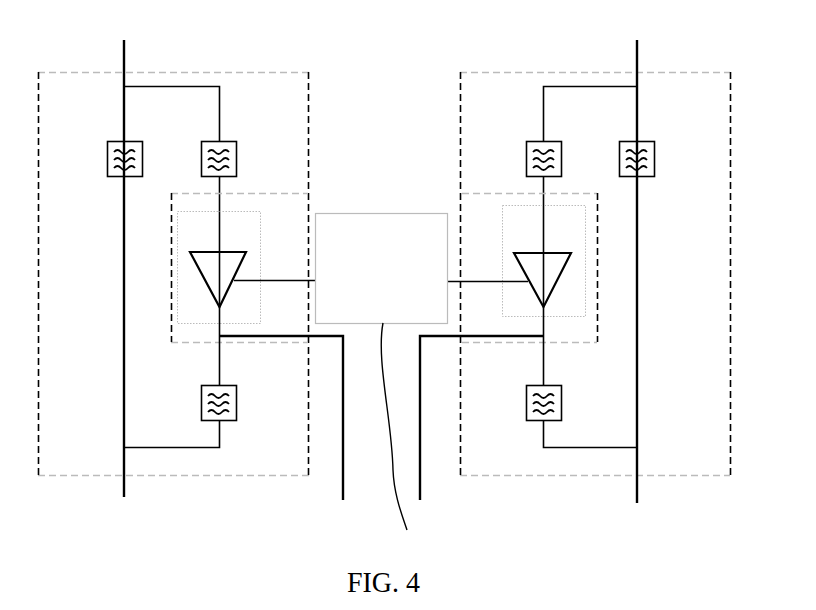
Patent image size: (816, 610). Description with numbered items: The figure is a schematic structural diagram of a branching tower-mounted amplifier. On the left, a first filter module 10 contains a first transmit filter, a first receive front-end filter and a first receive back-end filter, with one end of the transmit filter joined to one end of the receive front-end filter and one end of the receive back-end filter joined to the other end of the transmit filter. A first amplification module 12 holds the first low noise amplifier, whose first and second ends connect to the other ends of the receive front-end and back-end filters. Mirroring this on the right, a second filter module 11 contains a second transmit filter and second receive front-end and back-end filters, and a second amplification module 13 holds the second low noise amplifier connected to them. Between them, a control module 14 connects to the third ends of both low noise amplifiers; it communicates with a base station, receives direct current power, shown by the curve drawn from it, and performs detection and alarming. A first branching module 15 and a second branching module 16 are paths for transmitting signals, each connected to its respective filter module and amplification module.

The first filter module 10 is at (93, 72).
The second filter module 11 is at (673, 72).
The first amplification module 12 is at (260, 223).
The second amplification module 13 is at (502, 253).
The control module 14 is at (382, 372).
The first branching module 15 is at (343, 478).
The second branching module 16 is at (420, 478).